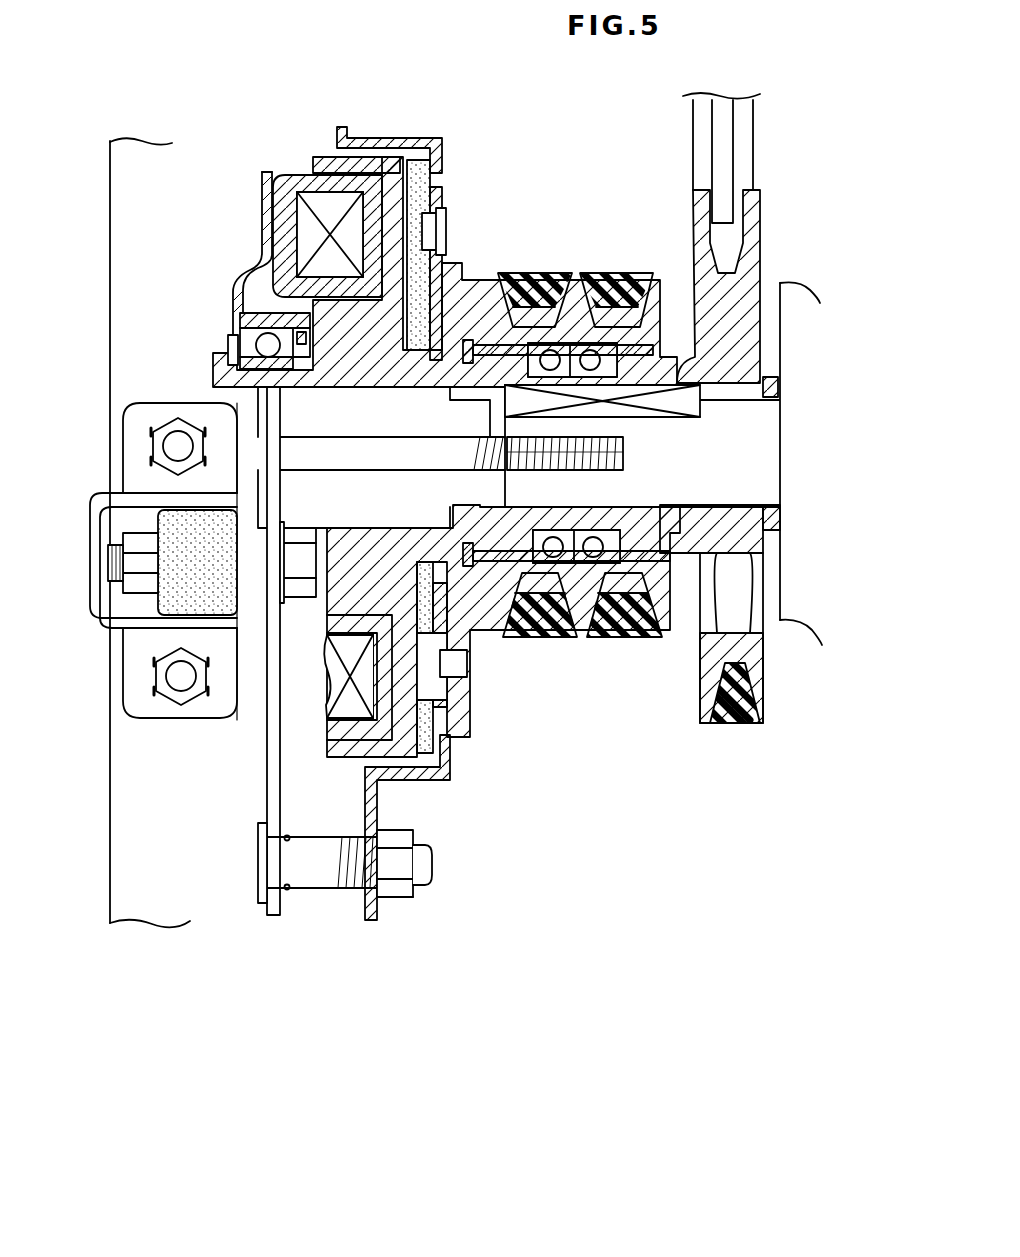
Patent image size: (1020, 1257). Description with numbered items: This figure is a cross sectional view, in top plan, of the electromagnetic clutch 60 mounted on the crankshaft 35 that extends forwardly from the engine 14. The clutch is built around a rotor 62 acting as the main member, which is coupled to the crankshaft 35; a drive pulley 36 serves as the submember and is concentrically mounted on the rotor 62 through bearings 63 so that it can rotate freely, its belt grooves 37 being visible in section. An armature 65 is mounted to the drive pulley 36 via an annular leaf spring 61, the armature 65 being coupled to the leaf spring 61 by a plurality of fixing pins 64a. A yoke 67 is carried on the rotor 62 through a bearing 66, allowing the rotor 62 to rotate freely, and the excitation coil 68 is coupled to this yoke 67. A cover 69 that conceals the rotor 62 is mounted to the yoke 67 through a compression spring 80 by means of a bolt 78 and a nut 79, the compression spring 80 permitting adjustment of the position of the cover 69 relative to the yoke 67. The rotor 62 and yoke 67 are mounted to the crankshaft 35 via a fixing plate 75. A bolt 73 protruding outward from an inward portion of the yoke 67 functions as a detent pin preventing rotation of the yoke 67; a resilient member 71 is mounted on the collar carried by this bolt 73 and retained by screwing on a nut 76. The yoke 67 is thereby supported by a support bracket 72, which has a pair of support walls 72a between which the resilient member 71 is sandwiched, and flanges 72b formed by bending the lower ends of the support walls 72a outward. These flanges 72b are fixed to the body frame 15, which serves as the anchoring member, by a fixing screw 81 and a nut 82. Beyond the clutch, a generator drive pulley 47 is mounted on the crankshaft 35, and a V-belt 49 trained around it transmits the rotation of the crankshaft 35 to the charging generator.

The engine 14 is at (799, 272).
The body frame 15 is at (106, 892).
The crankshaft 35 is at (733, 426).
The drive pulley 36 is at (477, 270).
The pulley V-groove rings 37 is at (518, 275).
The generator drive pulley 47 is at (758, 233).
The V-belt 49 is at (732, 740).
The electromagnetic clutch 60 is at (248, 95).
The leaf spring 61 is at (443, 230).
The rotor 62 is at (333, 153).
The bearings 63 is at (556, 343).
The fixing pins 64a is at (440, 192).
The armature 65 is at (421, 140).
The bearing 66 is at (247, 277).
The yoke 67 is at (262, 203).
The excitation coil 68 is at (337, 207).
The cover 69 is at (378, 797).
The resilient member 71 is at (193, 569).
The support bracket 72 is at (184, 748).
The support walls 72a is at (140, 500).
The flanges 72b is at (237, 490).
The bolt 73 is at (297, 533).
The fixing plate 75 is at (230, 350).
The nut 76 is at (130, 537).
The bolt 78 is at (432, 862).
The nut 79 is at (397, 897).
The compression spring 80 is at (320, 900).
The fixing screw 81 is at (167, 433).
The nut 82 is at (175, 425).